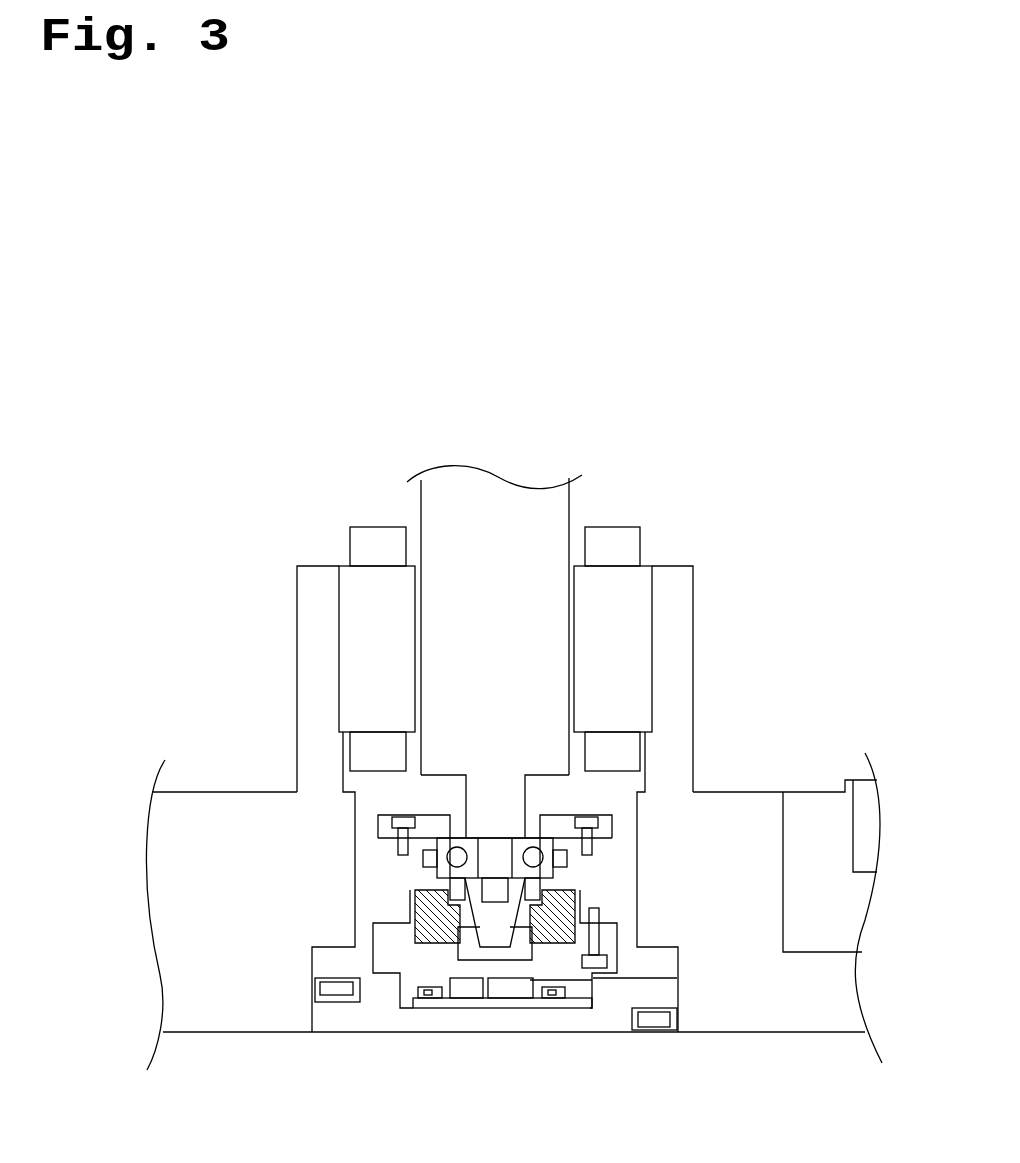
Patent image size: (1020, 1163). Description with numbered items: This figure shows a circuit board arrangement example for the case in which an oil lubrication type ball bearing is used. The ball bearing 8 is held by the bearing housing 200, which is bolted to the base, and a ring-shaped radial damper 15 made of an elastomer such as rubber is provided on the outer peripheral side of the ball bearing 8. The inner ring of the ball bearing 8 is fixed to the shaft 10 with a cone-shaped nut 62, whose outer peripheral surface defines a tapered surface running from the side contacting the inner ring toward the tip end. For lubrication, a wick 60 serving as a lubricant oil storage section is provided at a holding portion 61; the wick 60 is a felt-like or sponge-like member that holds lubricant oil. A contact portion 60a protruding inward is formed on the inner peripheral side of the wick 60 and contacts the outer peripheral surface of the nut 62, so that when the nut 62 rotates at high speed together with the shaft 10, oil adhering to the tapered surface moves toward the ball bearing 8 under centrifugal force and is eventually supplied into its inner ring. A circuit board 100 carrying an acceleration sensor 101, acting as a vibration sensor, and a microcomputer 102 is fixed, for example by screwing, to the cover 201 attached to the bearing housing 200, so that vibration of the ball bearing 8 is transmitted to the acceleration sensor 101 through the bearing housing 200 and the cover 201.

The shaft 10 is at (508, 512).
The radial damper 15 is at (563, 857).
The wick 60 is at (487, 917).
The contact portion 60a is at (468, 917).
The ball bearing 8 is at (570, 935).
The holding portion 61 is at (387, 943).
The cone-shaped nut 62 is at (485, 913).
The circuit board 100 is at (540, 1003).
The acceleration sensor 101 is at (513, 990).
The microcomputer 102 is at (465, 995).
The bearing housing 200 is at (342, 958).
The cover 201 is at (655, 993).